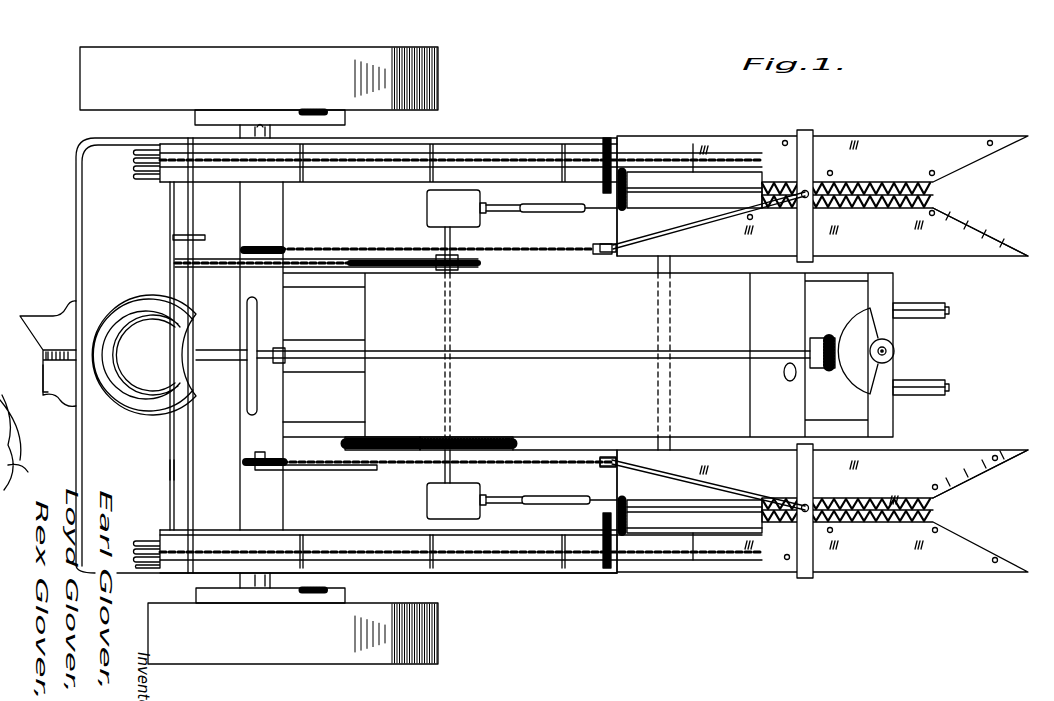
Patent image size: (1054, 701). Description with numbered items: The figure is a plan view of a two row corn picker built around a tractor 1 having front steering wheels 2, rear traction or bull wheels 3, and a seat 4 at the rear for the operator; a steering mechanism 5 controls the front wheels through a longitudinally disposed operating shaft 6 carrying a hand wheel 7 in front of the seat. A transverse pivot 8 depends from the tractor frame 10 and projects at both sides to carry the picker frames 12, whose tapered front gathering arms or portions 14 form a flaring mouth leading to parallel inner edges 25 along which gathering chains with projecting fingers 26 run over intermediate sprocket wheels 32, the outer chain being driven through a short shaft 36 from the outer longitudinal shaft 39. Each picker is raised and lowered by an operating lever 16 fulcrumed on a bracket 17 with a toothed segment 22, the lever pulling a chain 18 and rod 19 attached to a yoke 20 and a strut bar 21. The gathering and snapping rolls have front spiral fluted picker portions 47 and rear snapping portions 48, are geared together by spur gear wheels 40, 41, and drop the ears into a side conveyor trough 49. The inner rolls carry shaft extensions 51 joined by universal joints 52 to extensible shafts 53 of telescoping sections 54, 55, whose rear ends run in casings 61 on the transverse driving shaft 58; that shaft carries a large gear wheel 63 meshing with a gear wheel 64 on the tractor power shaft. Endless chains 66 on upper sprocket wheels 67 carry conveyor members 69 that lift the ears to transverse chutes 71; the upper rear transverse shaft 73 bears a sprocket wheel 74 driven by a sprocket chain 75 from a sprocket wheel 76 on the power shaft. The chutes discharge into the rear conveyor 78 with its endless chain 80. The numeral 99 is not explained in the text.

The tractor 1 is at (531, 355).
The front steering wheels 2 is at (946, 309).
The rear traction or bull wheels 3 is at (288, 666).
The seat 4 is at (169, 355).
The steering mechanism 5 is at (852, 330).
The operating shaft 6 is at (611, 351).
The hand wheel 7 is at (258, 334).
The transverse pivot 8 is at (668, 440).
The tractor frame 10 is at (313, 428).
The picker frames 12 is at (742, 137).
The front gathering arms or portions 14 is at (998, 452).
The operating levers 16 is at (333, 471).
The bracket 17 is at (255, 456).
The cable or chain 18 is at (550, 462).
The rod 19 is at (703, 480).
The yoke 20 is at (814, 463).
The strut bar 21 is at (608, 456).
The toothed segment 22 is at (248, 468).
The parallel inner edges 25 is at (932, 511).
The projecting fingers 26 is at (997, 232).
The intermediate sprocket wheels 32 is at (756, 490).
The short shaft 36 is at (787, 560).
The outer longitudinal shaft 39 is at (613, 576).
The spur gear wheel 40 is at (630, 498).
The spur gear wheel 41 is at (636, 560).
The front spiral fluted picker portions 47 is at (858, 183).
The rear snapping portions 48 is at (650, 172).
The trough 49 is at (524, 146).
The shaft extensions 51 is at (597, 213).
The universal joints 52 is at (583, 213).
The extensible shafts 53 is at (560, 499).
The tubular shaft section 54 is at (560, 505).
The shaft section 55 is at (504, 511).
The transverse driving shaft 58 is at (445, 478).
The sectional casings 61 is at (427, 209).
The large gear wheel 63 is at (490, 437).
The gear wheel 64 is at (398, 437).
The endless chains 66 is at (452, 160).
The upper sprocket wheels 67 is at (200, 548).
The conveyor members 69 is at (432, 560).
The transverse chutes 71 is at (346, 355).
The upper rear transverse shaft 73 is at (172, 472).
The sprocket wheel 74 is at (178, 265).
The sprocket chain 75 is at (316, 251).
The sprocket wheel 76 is at (478, 266).
The rear conveyor 78 is at (36, 316).
The endless chain 80 is at (62, 365).
The stop 99 is at (204, 235).